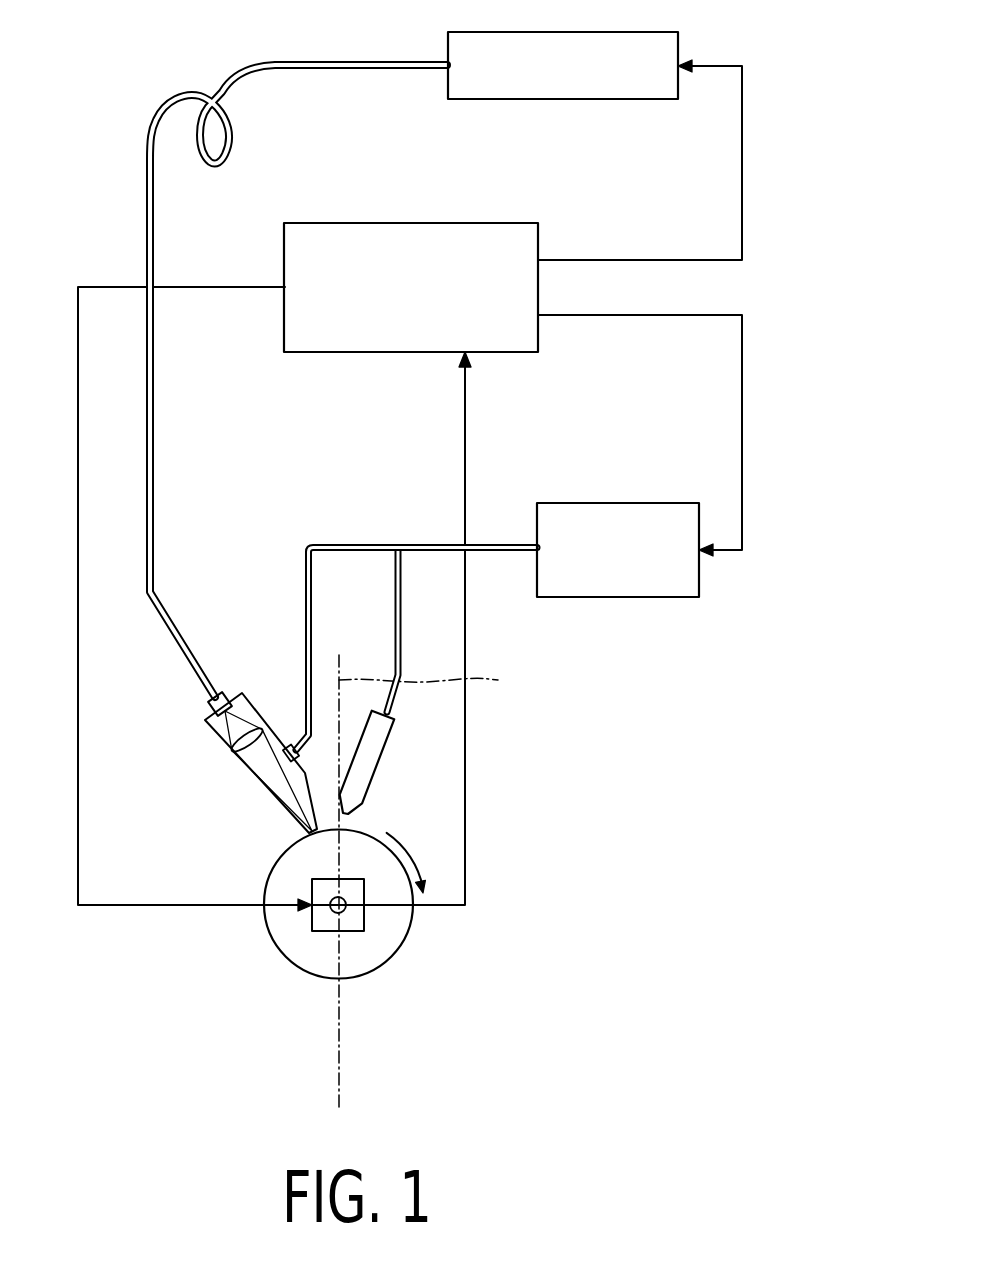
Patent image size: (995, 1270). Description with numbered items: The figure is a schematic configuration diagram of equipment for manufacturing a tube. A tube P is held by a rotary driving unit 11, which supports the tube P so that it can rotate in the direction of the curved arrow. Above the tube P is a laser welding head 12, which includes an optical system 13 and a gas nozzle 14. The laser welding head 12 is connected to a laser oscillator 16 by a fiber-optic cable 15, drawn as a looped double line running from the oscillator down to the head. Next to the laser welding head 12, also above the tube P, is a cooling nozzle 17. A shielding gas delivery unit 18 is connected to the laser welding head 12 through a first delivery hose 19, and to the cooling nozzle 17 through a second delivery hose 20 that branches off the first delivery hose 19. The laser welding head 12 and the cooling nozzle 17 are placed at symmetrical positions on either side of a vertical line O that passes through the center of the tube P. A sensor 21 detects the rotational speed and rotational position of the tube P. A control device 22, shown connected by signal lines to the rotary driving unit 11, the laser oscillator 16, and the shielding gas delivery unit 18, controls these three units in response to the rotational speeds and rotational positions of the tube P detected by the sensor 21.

The rotary driving unit 11 is at (323, 920).
The laser welding head 12 is at (247, 740).
The optical system 13 is at (215, 732).
The gas nozzle 14 is at (277, 822).
The fiber-optic cable 15 is at (153, 427).
The laser oscillator 16 is at (633, 32).
The cooling nozzle 17 is at (387, 755).
The shielding gas delivery unit 18 is at (645, 503).
The first delivery hose 19 is at (508, 545).
The second delivery hose 20 is at (401, 609).
The sensor 21 is at (343, 893).
The control device 22 is at (483, 223).
The vertical line O is at (431, 681).
The tube P is at (353, 963).